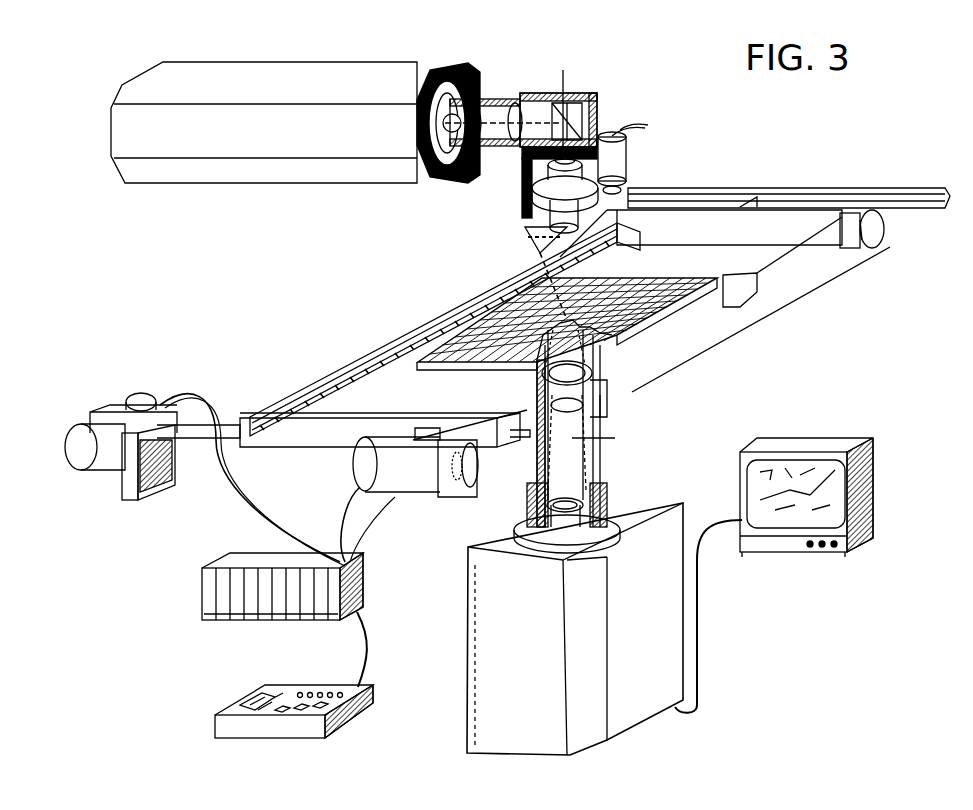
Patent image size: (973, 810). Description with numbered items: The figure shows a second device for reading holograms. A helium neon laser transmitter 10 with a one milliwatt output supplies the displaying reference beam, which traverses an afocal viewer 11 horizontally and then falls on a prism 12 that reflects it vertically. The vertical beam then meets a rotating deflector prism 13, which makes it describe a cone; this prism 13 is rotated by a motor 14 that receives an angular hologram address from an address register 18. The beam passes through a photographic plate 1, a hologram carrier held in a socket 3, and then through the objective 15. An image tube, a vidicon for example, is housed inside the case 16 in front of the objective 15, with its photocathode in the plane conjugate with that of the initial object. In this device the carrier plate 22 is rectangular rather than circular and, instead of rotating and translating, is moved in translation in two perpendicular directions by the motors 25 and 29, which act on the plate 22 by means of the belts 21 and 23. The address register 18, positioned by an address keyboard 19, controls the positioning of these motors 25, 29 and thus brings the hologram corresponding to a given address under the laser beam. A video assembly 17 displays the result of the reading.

The photographic plate 1 is at (457, 354).
The socket 3 is at (422, 366).
The helium neon laser transmitter 10 is at (258, 63).
The afocal viewer 11 is at (484, 100).
The prism 12 is at (586, 101).
The rotating deflector prism 13 is at (522, 242).
The motor 14 is at (626, 152).
The objective 15 is at (592, 374).
The case 16 is at (470, 682).
The video assembly monitor 17 is at (745, 488).
The address register 18 is at (202, 585).
The address keyboard 19 is at (215, 728).
The belt 21 is at (240, 468).
The plate 22 is at (393, 340).
The belt 23 is at (770, 310).
The motor 25 is at (363, 463).
The motor 29 is at (122, 408).